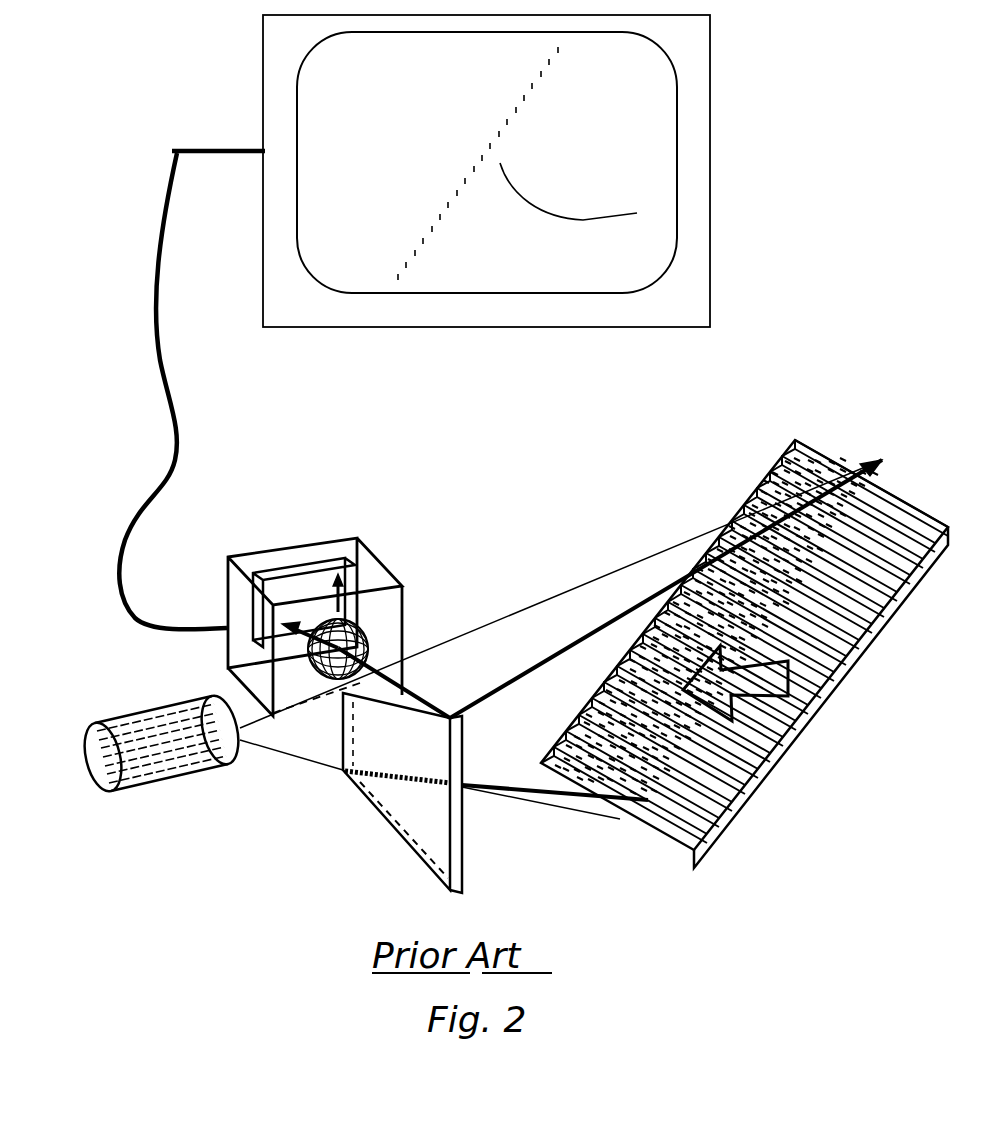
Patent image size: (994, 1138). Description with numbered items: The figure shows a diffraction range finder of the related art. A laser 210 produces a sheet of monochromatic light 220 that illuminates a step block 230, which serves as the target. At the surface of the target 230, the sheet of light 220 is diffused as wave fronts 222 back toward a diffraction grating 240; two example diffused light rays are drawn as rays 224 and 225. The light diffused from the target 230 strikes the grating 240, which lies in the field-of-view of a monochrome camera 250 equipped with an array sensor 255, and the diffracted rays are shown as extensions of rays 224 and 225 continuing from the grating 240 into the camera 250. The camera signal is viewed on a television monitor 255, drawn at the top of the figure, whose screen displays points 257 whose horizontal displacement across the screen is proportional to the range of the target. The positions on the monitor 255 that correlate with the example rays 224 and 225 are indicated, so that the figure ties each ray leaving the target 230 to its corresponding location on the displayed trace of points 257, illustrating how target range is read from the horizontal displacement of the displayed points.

The laser 210 is at (107, 723).
The sheet of monochromatic light 220 is at (552, 605).
The wave fronts 222 is at (803, 727).
The diffused light ray 224 is at (408, 262).
The diffused light ray 225 is at (550, 65).
The step block 230 is at (705, 850).
The diffraction grating 240 is at (390, 823).
The monochrome camera 250 is at (227, 583).
The array sensor 255 is at (433, 328).
The points 257 is at (637, 213).